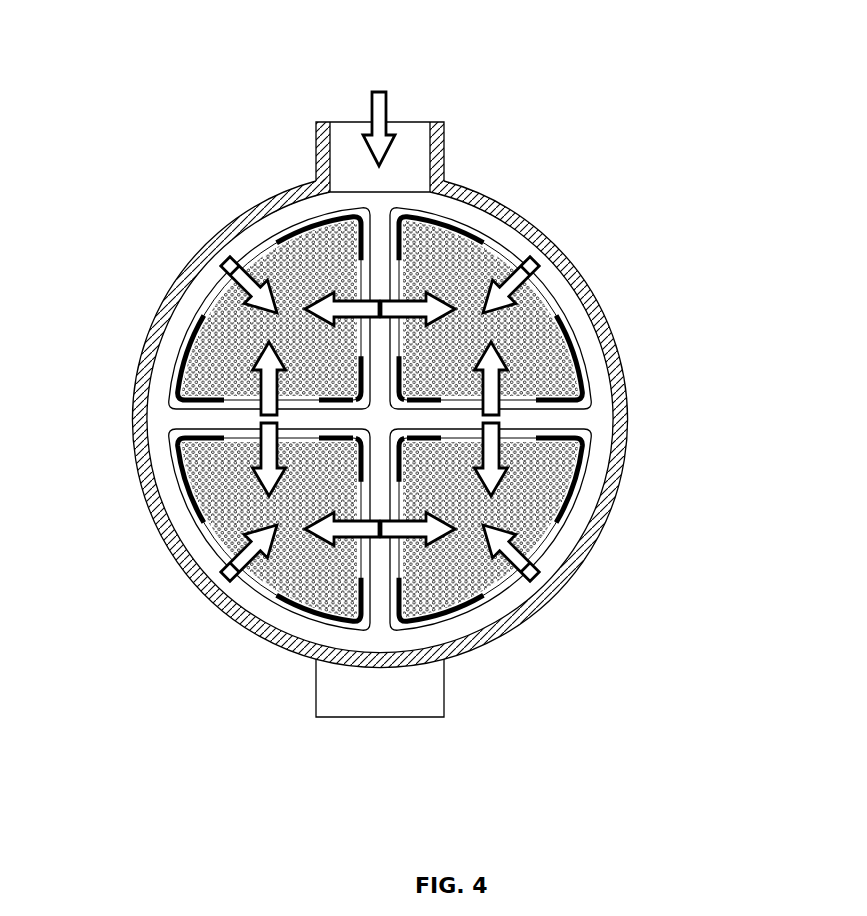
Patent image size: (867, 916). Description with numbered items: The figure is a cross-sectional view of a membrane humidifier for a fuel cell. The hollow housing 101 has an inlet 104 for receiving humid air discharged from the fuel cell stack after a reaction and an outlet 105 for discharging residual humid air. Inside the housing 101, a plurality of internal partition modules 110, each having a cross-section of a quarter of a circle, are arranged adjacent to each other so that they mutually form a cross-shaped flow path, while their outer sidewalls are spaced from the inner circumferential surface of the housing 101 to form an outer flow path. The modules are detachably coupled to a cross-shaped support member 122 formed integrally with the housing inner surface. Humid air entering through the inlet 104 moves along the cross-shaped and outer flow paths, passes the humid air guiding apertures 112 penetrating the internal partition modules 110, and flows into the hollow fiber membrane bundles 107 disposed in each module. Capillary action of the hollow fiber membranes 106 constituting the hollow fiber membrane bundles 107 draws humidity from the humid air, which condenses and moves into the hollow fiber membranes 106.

The housing 101 is at (548, 240).
The inlet 104 is at (413, 135).
The outlet 105 is at (398, 717).
The hollow fiber membrane 106 is at (226, 527).
The hollow fiber membrane bundles 107 is at (258, 593).
The internal partition module 110 is at (574, 321).
The humid air guiding aperture 112 is at (405, 277).
The cross-shaped support member 122 is at (222, 409).